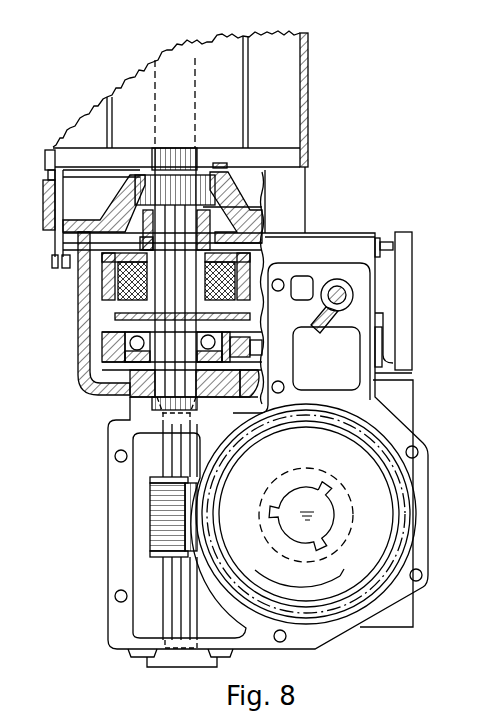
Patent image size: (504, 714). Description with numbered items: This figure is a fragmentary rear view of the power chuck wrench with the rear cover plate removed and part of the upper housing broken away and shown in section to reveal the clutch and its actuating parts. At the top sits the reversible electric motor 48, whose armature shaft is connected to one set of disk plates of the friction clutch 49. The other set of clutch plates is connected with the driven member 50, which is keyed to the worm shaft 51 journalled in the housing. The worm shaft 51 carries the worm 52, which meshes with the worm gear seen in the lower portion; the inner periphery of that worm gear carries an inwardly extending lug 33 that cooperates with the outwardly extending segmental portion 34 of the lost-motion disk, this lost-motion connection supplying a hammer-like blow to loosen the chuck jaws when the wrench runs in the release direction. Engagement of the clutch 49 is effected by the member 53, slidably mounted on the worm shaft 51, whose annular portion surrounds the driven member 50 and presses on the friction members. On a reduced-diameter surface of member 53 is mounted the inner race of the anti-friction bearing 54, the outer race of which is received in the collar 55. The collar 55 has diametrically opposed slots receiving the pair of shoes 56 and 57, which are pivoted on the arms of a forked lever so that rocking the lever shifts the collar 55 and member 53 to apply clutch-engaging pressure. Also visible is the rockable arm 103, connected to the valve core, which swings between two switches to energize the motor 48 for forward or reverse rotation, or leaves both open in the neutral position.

The reversible electric motor 48 is at (318, 101).
The friction clutch 49 is at (100, 288).
The driven member 50 is at (148, 314).
The worm shaft 51 is at (130, 393).
The worm 52 is at (150, 514).
The member 53 is at (237, 312).
The anti-friction bearing 54 is at (170, 365).
The collar 55 is at (90, 388).
The shoe 56 is at (128, 350).
The shoe 57 is at (246, 337).
The rockable arm 103 is at (320, 330).
The lug 33 is at (273, 492).
The segmental portion 34 is at (357, 567).